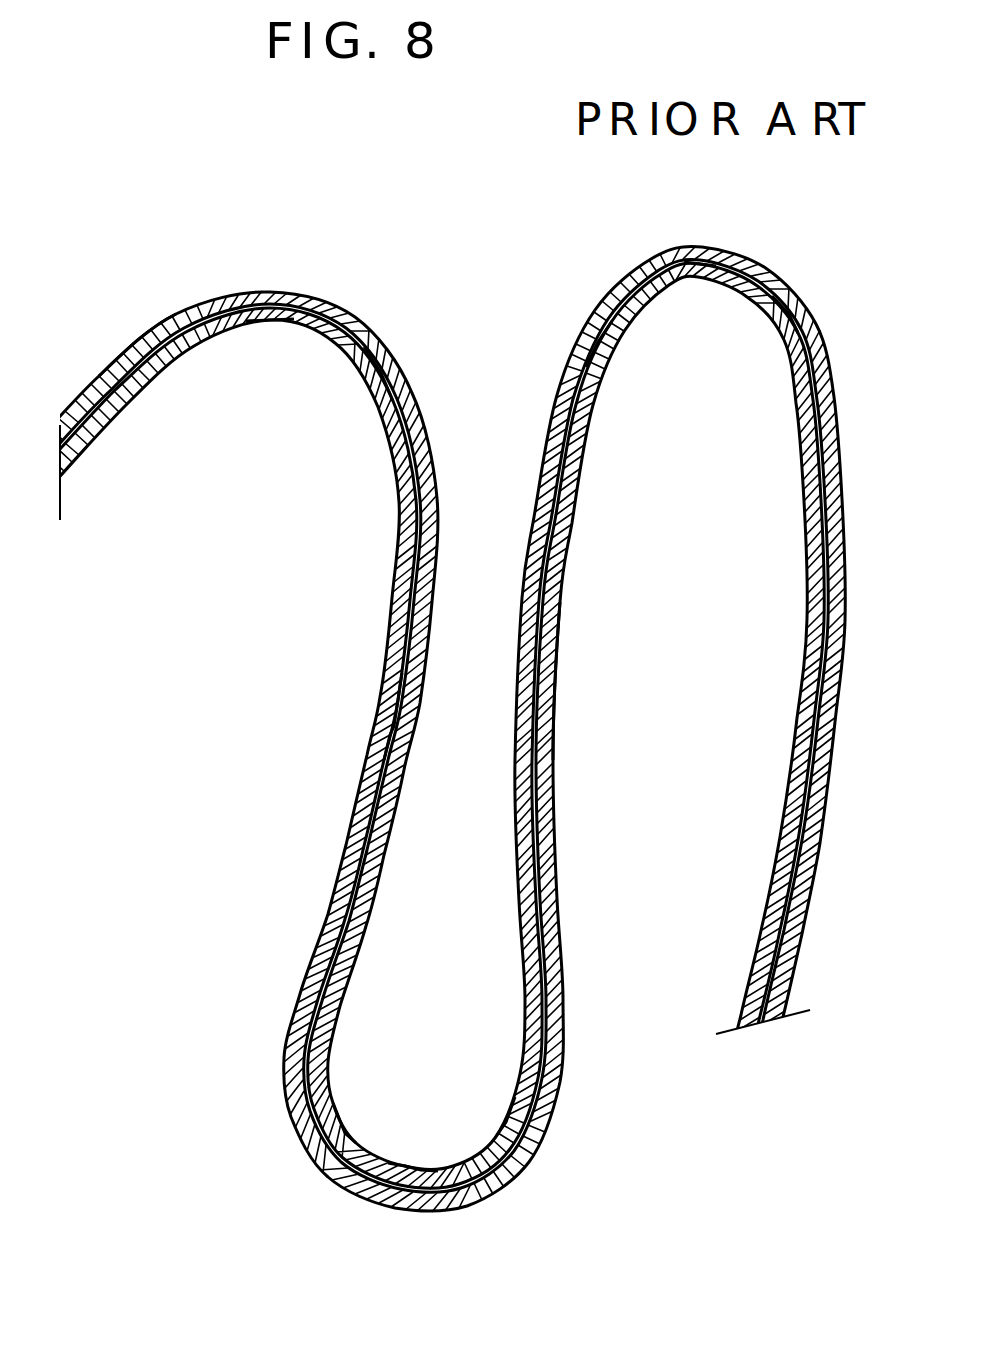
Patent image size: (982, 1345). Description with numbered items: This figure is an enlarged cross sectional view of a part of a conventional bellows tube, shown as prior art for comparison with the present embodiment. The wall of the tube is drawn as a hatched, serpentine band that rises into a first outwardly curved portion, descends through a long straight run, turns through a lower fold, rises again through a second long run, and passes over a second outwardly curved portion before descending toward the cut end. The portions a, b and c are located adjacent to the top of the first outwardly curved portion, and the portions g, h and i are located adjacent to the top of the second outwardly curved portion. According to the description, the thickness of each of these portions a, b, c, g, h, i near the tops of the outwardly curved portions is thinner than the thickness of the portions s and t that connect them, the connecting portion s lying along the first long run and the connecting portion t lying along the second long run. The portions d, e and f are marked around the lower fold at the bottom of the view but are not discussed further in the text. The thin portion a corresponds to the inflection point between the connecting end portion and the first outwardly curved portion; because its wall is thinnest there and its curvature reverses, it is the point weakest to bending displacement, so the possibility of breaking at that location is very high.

The thin portion adjacent to the top of the outwardly curved portion a is at (124, 415).
The thin portion adjacent to the top of the outwardly curved portion b is at (276, 330).
The thin portion adjacent to the top of the outwardly curved portion c is at (370, 393).
The bottom fold left portion d is at (333, 1091).
The bottom of bottom fold e is at (416, 1164).
The bottom fold right portion f is at (512, 1102).
The thin portion adjacent to the top of the outwardly curved portion g is at (602, 403).
The thin portion adjacent to the top of the outwardly curved portion h is at (693, 284).
The thin portion adjacent to the top of the outwardly curved portion i is at (778, 372).
The connecting portion s is at (364, 712).
The connecting portion t is at (558, 708).